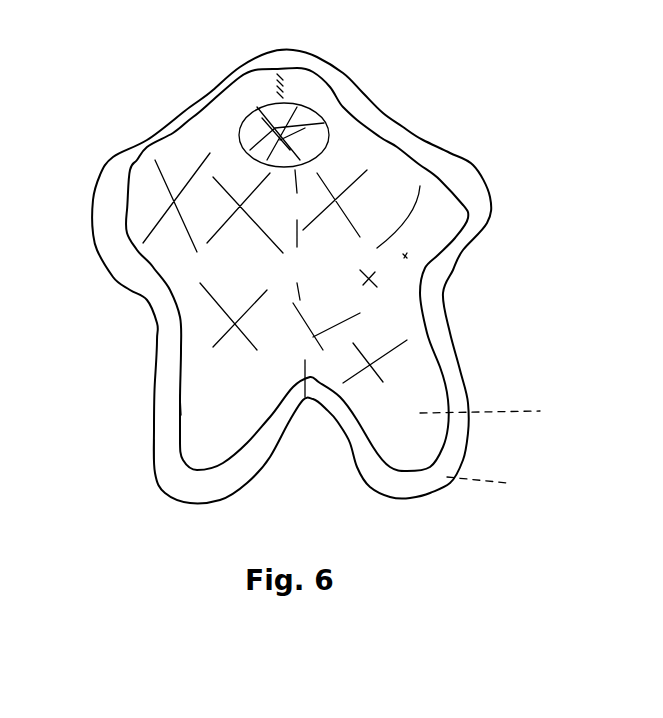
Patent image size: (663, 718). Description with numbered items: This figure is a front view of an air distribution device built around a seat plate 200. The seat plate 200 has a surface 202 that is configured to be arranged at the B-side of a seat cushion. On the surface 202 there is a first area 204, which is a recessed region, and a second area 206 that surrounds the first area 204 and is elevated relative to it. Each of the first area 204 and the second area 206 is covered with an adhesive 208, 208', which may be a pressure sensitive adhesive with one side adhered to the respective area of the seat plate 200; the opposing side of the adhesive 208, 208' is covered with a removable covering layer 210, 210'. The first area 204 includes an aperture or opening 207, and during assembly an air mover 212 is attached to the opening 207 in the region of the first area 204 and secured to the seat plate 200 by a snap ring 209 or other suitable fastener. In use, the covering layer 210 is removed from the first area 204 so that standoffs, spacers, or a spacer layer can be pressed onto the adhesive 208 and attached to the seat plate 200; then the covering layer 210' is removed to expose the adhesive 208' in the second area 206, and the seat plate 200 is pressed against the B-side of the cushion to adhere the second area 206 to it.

The seat plate 200 is at (304, 256).
The surface 202 is at (410, 286).
The first area 204 is at (413, 388).
The second area 206 is at (455, 451).
The aperture or opening 207 is at (260, 53).
The snap ring 209 is at (279, 98).
The adhesive 208 is at (503, 412).
The adhesive 208' is at (502, 481).
The removable covering layer 210 is at (126, 399).
The removable covering layer 210' is at (94, 446).
The air mover 212 is at (335, 111).